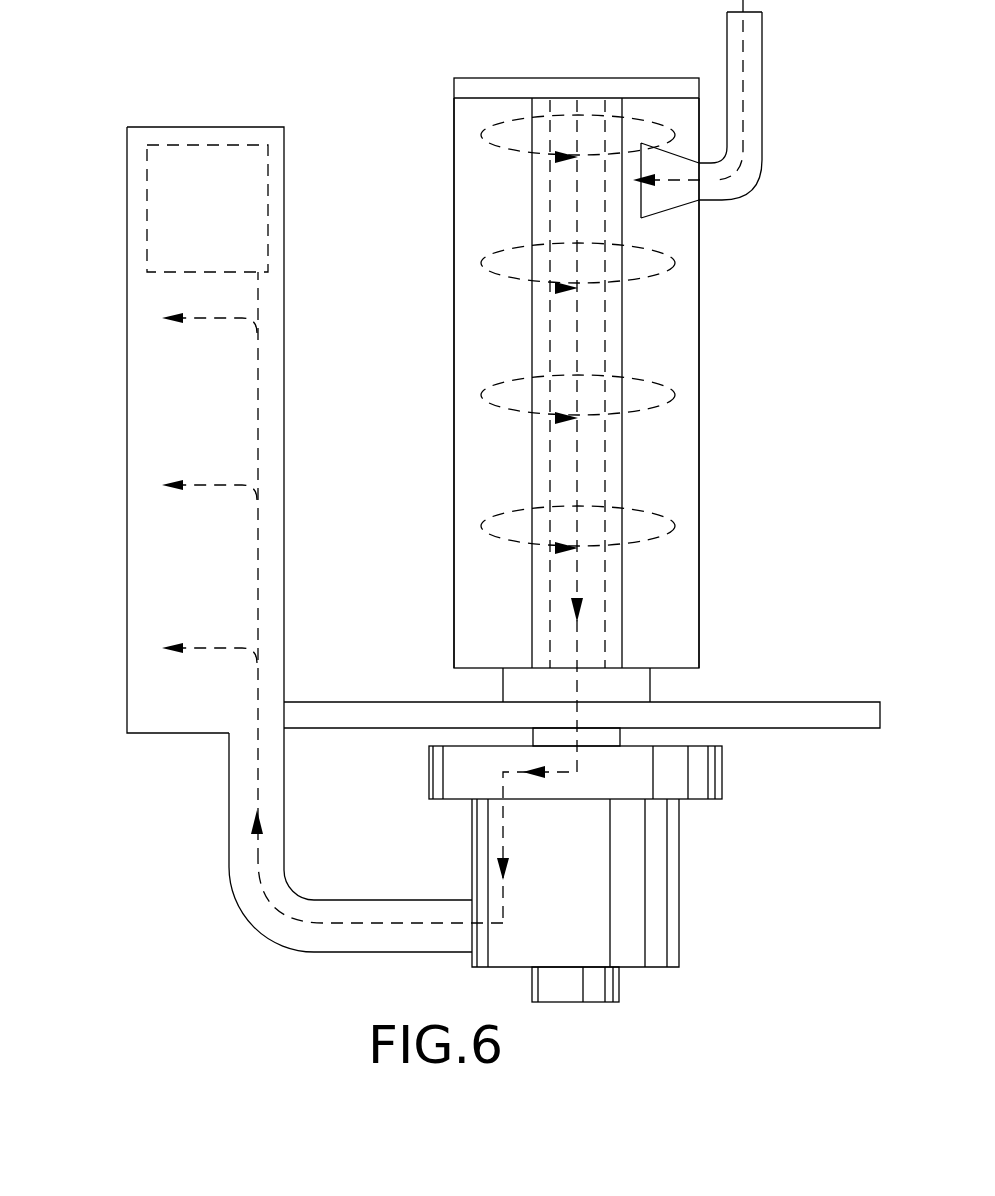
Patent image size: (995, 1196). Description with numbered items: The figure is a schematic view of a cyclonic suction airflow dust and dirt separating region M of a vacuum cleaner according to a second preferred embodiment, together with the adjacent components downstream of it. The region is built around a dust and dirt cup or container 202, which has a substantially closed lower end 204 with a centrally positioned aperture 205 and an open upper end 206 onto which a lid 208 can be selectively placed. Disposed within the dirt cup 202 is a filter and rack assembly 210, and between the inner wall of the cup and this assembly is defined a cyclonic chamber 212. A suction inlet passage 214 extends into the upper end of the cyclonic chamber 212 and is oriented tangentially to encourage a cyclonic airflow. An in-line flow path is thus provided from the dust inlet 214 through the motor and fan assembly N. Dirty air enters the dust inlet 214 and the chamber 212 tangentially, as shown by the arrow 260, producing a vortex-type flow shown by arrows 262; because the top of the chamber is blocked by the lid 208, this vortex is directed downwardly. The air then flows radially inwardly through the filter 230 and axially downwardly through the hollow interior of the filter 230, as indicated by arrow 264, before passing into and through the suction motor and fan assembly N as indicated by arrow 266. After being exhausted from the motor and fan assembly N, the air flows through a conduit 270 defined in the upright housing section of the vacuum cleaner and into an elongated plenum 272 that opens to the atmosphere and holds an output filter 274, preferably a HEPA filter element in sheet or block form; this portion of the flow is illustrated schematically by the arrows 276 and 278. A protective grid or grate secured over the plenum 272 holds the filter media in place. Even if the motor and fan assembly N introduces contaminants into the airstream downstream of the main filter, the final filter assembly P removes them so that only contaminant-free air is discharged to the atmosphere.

The dust and dirt cup or container 202 is at (445, 250).
The closed lower end 204 is at (668, 667).
The aperture 205 is at (577, 667).
The open upper end 206 is at (493, 97).
The lid 208 is at (495, 92).
The filter and rack assembly 210 is at (632, 333).
The cyclonic chamber 212 is at (683, 280).
The suction inlet passage 214 is at (748, 160).
The filter 230 is at (532, 333).
The arrow 260 is at (672, 182).
The arrows 262 is at (512, 413).
The arrow 264 is at (625, 473).
The arrow 266 is at (473, 832).
The conduit 270 is at (265, 920).
The plenum 272 is at (158, 362).
The output filter 274 is at (165, 125).
The arrow 276 is at (230, 772).
The arrow 278 is at (210, 638).
The final filter assembly P is at (297, 358).
The cyclonic suction airflow dust and dirt separating region M is at (726, 394).
The motor and fan assembly N is at (662, 882).